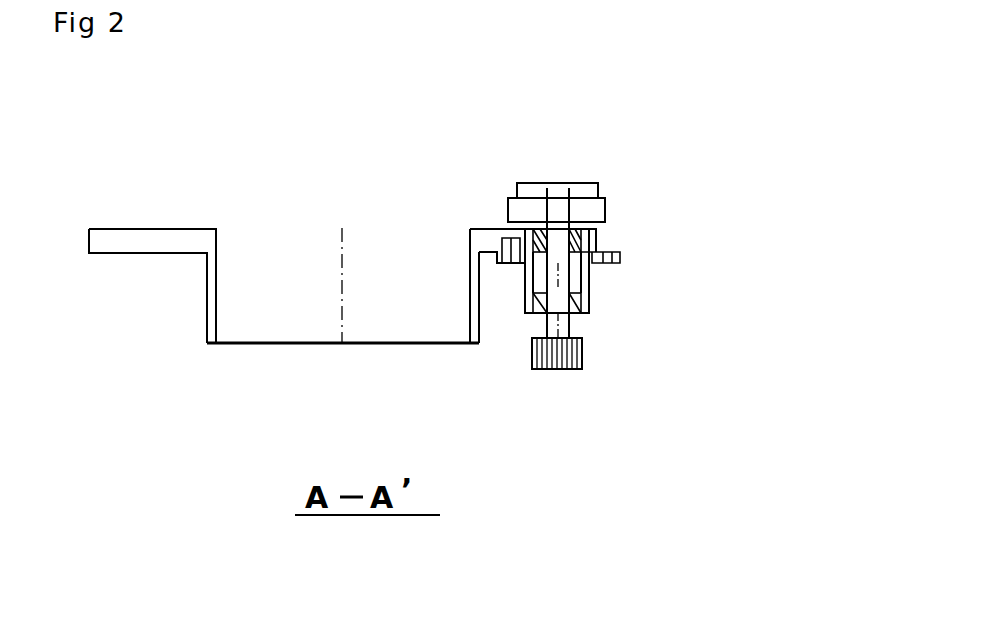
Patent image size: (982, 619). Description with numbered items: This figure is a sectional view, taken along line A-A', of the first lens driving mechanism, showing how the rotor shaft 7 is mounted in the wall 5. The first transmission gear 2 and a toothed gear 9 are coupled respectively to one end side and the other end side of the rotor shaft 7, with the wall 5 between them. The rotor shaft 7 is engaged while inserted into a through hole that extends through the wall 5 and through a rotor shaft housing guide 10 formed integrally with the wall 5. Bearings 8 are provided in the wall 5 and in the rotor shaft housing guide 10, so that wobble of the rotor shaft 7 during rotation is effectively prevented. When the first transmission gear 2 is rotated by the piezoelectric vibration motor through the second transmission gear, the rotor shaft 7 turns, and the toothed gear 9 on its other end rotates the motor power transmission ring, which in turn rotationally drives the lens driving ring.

The first transmission gear 2 is at (606, 200).
The wall 5 is at (470, 229).
The rotor shaft 7 is at (543, 328).
The bearings 8 is at (596, 231).
The toothed gear 9 is at (583, 360).
The rotor shaft housing guide 10 is at (620, 263).